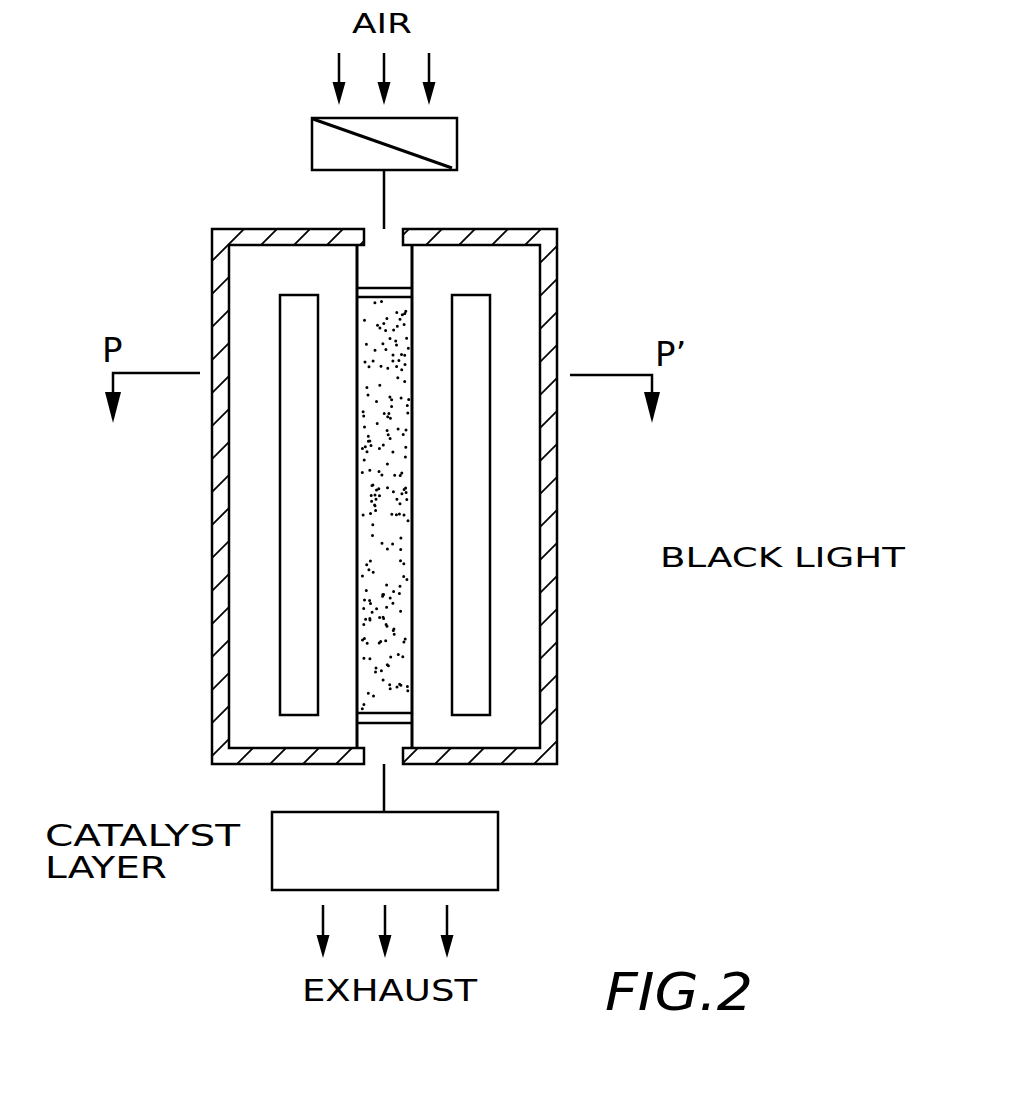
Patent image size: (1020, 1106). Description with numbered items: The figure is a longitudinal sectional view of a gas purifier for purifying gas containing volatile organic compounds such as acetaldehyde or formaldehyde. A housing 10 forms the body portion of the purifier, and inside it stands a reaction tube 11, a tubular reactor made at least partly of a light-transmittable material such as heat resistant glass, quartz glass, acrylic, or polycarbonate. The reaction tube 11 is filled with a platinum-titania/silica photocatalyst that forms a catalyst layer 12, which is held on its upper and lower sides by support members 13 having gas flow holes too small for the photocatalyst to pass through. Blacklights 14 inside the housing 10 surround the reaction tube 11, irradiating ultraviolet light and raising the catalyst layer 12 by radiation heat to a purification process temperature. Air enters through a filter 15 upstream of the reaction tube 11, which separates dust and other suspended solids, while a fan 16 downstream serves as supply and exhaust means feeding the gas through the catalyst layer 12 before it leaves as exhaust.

The housing 10 is at (212, 710).
The reaction tube 11 is at (416, 322).
The catalyst layer 12 is at (372, 686).
The support member 13 is at (382, 287).
The blacklight 14 is at (280, 533).
The filter 15 is at (457, 140).
The fan 16 is at (498, 855).